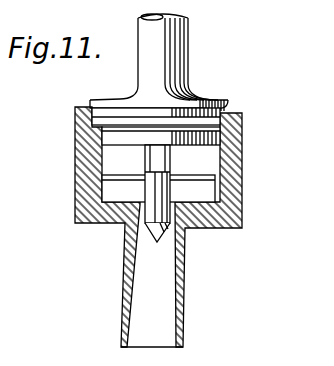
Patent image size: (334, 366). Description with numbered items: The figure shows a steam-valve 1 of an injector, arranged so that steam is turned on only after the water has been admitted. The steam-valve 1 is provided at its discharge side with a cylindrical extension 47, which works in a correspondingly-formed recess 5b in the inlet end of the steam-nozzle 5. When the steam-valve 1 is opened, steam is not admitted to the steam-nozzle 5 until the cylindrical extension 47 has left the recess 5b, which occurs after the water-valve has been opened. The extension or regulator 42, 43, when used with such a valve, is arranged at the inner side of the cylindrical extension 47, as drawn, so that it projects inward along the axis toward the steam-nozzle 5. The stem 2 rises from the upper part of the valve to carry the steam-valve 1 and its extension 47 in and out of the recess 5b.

The steam-valve 1 is at (222, 102).
The stem / tubular member 2 is at (182, 53).
The cylindrical extension 47 is at (222, 133).
The recess 5b is at (193, 186).
The extension or regulator 42 is at (212, 210).
The extension or regulator 43 is at (160, 235).
The steam-nozzle 5 is at (167, 308).